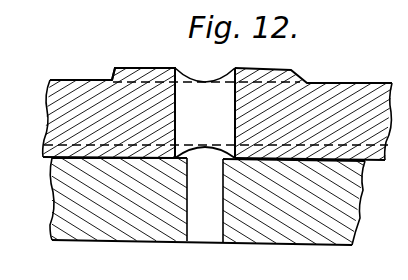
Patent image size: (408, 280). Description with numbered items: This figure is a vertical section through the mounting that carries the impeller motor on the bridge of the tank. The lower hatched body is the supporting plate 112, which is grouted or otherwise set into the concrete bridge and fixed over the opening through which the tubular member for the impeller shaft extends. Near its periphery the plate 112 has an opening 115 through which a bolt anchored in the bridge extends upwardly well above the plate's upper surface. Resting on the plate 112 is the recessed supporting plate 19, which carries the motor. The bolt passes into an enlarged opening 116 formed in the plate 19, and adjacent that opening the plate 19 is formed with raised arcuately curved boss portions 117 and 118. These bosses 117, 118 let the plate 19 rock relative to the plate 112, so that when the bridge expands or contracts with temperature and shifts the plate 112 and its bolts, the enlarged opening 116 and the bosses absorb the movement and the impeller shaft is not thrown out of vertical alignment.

The supporting plate 19 is at (357, 92).
The raised arcuately curved boss portion 117 is at (135, 70).
The raised arcuately curved boss portion 118 is at (46, 158).
The enlarged opening 116 is at (220, 97).
The supporting plate 112 is at (97, 232).
The opening 115 is at (217, 228).